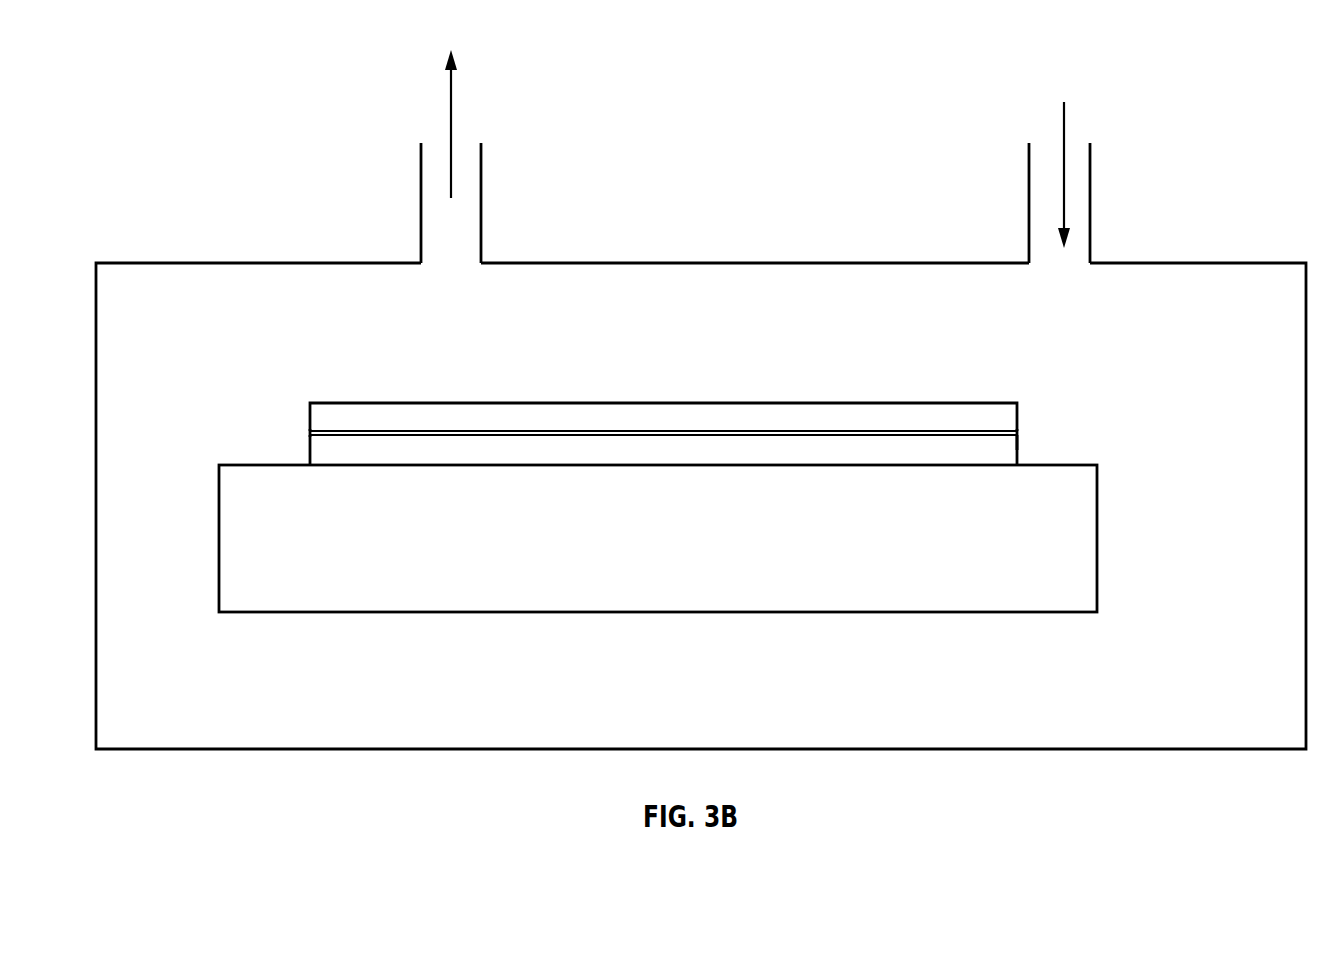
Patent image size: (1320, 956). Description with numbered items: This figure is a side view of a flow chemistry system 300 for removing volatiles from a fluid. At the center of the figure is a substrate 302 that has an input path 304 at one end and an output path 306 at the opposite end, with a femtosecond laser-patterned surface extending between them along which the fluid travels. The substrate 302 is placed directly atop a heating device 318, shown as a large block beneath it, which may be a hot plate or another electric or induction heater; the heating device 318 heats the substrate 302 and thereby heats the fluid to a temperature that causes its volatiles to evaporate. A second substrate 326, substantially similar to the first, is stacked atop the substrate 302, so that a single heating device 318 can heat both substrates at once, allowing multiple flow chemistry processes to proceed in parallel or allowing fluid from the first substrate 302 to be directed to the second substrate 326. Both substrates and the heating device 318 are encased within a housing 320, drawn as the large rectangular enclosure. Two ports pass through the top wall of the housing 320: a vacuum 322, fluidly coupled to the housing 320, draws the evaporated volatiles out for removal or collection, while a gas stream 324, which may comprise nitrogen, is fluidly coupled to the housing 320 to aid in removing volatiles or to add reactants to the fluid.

The system 300 is at (356, 72).
The substrate 302 is at (340, 440).
The input path 304 is at (306, 432).
The output path 306 is at (1021, 446).
The heating device 318 is at (1031, 597).
The housing 320 is at (331, 749).
The vacuum 322 is at (407, 211).
The gas stream 324 is at (1014, 203).
The second substrate 326 is at (930, 401).